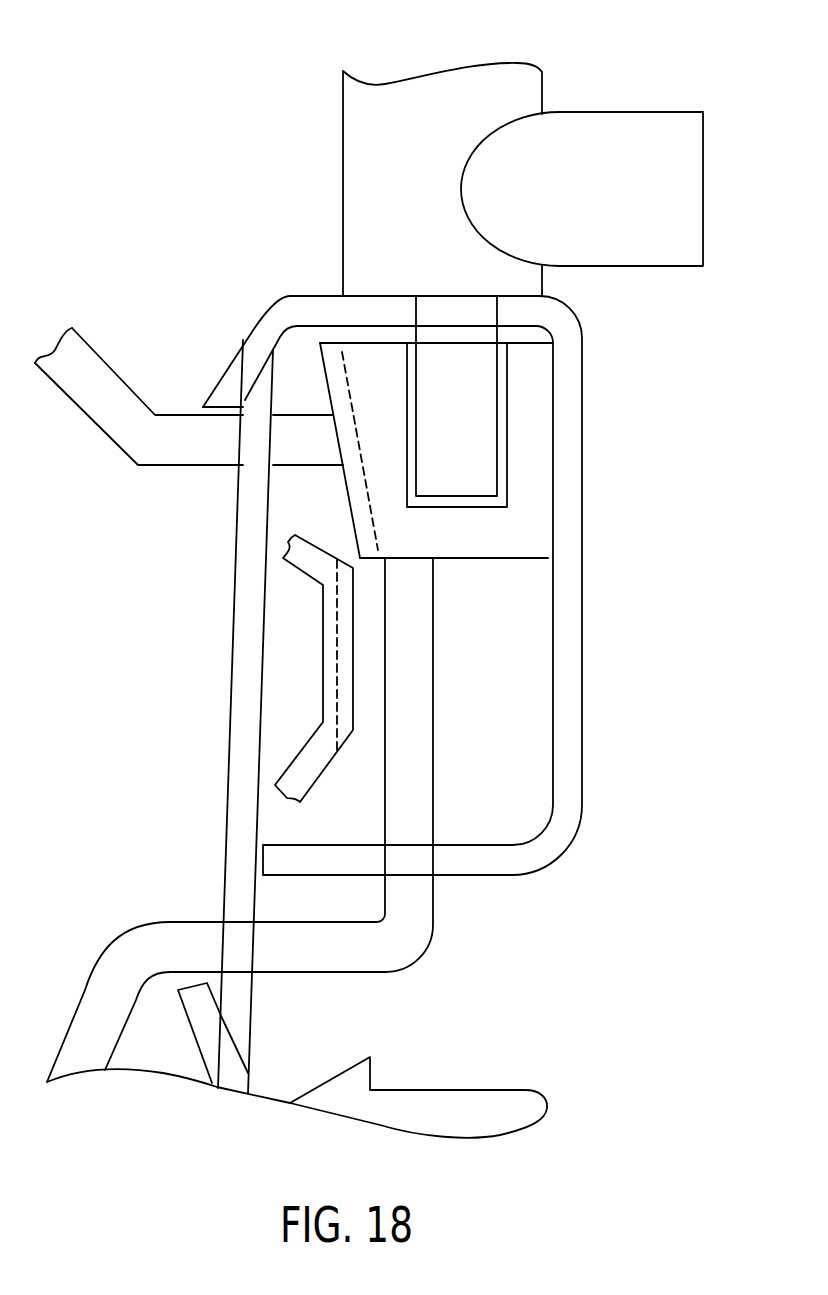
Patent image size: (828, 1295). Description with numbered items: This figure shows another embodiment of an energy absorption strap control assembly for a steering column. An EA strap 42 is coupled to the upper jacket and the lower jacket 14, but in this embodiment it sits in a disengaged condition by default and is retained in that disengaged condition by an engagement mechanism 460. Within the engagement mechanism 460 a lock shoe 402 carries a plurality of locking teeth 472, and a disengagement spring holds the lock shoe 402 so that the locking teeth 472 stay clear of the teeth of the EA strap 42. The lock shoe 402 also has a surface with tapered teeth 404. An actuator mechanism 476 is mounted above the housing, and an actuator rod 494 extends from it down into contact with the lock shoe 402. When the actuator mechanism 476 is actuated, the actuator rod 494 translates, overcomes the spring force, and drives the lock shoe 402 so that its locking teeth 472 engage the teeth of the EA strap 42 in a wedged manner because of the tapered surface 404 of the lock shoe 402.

The lower jacket 14 is at (90, 400).
The EA strap 42 is at (337, 622).
The lock shoe 402 is at (518, 532).
The tapered teeth 404 is at (340, 460).
The engagement mechanism 460 is at (555, 380).
The locking teeth 472 is at (357, 500).
The actuator mechanism 476 is at (560, 97).
The actuator rod 494 is at (477, 450).